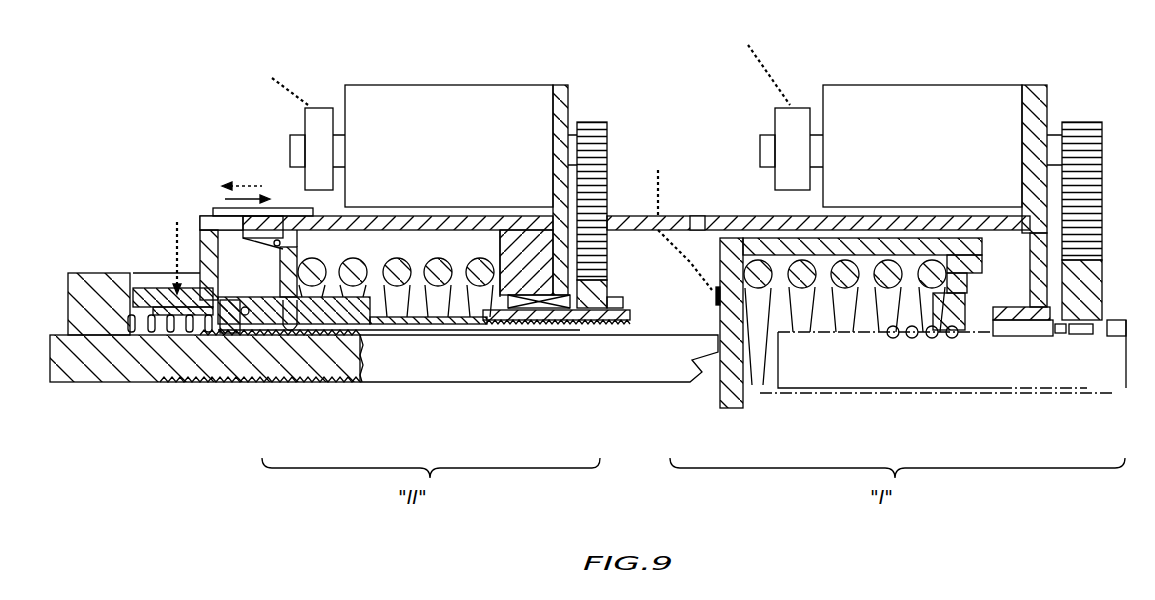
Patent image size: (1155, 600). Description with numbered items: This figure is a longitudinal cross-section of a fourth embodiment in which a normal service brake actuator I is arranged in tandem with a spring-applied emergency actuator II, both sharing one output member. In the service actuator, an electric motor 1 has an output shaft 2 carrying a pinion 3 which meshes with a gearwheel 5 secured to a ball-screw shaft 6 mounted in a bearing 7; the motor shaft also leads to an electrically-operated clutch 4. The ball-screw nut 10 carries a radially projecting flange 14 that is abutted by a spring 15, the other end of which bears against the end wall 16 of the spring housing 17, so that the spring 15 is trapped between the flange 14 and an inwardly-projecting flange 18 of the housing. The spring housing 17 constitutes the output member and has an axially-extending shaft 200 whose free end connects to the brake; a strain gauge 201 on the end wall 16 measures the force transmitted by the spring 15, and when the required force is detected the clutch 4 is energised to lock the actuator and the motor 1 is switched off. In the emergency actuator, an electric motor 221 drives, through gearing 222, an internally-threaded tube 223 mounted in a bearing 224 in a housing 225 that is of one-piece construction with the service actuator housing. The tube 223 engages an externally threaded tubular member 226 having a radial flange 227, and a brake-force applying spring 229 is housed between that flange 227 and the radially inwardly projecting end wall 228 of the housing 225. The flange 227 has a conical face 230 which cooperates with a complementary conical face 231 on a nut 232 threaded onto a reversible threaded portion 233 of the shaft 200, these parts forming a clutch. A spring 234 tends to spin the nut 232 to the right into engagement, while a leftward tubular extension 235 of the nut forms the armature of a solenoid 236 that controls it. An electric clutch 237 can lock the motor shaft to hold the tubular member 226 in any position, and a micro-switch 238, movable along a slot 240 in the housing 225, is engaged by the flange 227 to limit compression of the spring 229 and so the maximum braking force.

The electric motor 1 is at (927, 137).
The output shaft 2 is at (340, 420).
The pinion 3 is at (1085, 135).
The electrically-operated clutch 4 is at (790, 112).
The gearwheel 5 is at (1078, 220).
The ball-screw shaft 6 is at (950, 332).
The bearing 7 is at (1012, 338).
The nut 10 is at (884, 342).
The second flange 14 is at (950, 266).
The spring 15 is at (890, 268).
The end wall 16 is at (730, 308).
The spring housing 17 is at (760, 234).
The inwardly-projecting flange 18 is at (975, 262).
The axially-extending shaft 200 is at (657, 350).
The strain gauge 201 is at (712, 290).
The electric motor 221 is at (445, 108).
The gearing 222 is at (598, 192).
The internally-threaded tube 223 is at (578, 310).
The bearing 224 is at (541, 310).
The housing 225 is at (527, 246).
The externally threaded tubular member 226 is at (430, 325).
The radial flange 227 is at (280, 274).
The end wall 228 is at (510, 243).
The brake-force applying spring 229 is at (352, 266).
The conical face 230 is at (283, 377).
The complementary conical face 231 is at (292, 300).
The nut 232 is at (197, 381).
The threaded portion 233 is at (229, 326).
The spring 234 is at (162, 312).
The tubular extension 235 is at (118, 315).
The solenoid 236 is at (166, 288).
The electric clutch 237 is at (315, 110).
The micro-switch 238 is at (271, 225).
The slot 240 is at (207, 214).